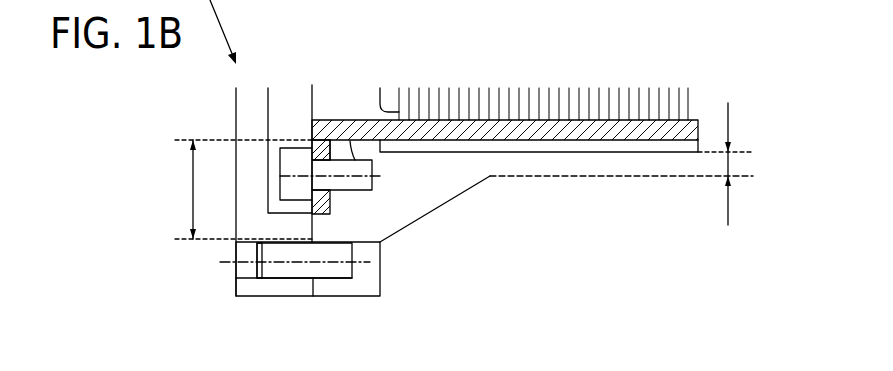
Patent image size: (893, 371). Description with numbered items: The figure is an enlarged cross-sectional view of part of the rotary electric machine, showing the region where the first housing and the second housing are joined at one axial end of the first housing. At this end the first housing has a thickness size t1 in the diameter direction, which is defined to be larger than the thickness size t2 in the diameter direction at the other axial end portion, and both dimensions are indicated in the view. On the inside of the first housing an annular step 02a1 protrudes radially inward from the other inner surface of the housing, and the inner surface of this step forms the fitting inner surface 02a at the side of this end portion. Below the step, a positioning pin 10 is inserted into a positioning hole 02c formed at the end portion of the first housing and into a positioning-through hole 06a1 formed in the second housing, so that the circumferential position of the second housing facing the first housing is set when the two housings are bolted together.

The fitting inner surface 02a is at (363, 192).
The annular step 02a1 is at (372, 146).
The positioning hole 02c is at (330, 275).
The positioning-through hole 06a1 is at (248, 270).
The positioning pin 10 is at (279, 270).
The thickness size t1 is at (237, 189).
The thickness size t2 is at (575, 172).